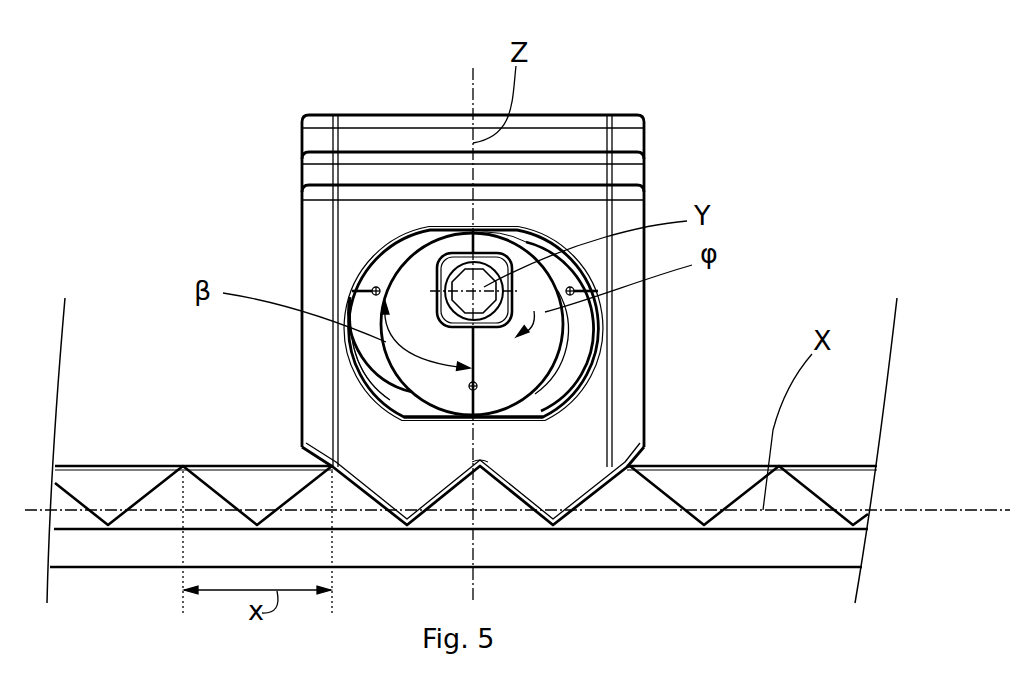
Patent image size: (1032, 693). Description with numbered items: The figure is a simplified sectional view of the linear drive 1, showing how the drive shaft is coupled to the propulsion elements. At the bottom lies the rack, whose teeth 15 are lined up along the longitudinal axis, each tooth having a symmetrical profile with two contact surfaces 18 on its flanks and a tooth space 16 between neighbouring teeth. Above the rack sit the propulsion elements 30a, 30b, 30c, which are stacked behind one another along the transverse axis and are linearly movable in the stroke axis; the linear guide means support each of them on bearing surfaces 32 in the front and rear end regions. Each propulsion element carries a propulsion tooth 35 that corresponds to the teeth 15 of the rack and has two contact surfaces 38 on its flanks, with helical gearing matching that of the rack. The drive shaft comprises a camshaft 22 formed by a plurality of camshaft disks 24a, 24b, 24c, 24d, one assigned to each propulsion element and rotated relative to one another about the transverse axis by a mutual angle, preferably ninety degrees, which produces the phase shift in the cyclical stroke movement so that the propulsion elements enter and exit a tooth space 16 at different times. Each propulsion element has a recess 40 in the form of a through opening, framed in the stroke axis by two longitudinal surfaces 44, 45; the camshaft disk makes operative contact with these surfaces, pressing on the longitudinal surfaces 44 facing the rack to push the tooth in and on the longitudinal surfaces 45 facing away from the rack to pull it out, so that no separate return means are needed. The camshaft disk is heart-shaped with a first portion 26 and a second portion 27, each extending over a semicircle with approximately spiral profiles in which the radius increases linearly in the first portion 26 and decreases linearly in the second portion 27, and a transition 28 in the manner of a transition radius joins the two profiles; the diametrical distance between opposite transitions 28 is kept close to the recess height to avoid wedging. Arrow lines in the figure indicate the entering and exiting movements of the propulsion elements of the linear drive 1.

The linear drive 1 is at (126, 88).
The teeth 15 is at (788, 497).
The tooth space 16 is at (850, 512).
The contact surfaces 18 is at (744, 497).
The camshaft 22 is at (366, 382).
The camshaft disk 24a is at (522, 350).
The camshaft disk 24b is at (353, 296).
The camshaft disk 24c is at (592, 284).
The camshaft disk 24d is at (537, 243).
The first portion 26 is at (597, 390).
The second portion 27 is at (412, 388).
The transition 28 is at (423, 235).
The propulsion element 30a is at (585, 210).
The propulsion element 30b is at (548, 172).
The propulsion element 30c is at (422, 146).
The bearing surfaces 32 is at (322, 207).
The propulsion tooth 35 is at (403, 485).
The contact surfaces 38 is at (477, 495).
The recess 40 is at (382, 267).
The longitudinal surfaces 44 is at (512, 419).
The longitudinal surfaces 45 is at (448, 235).